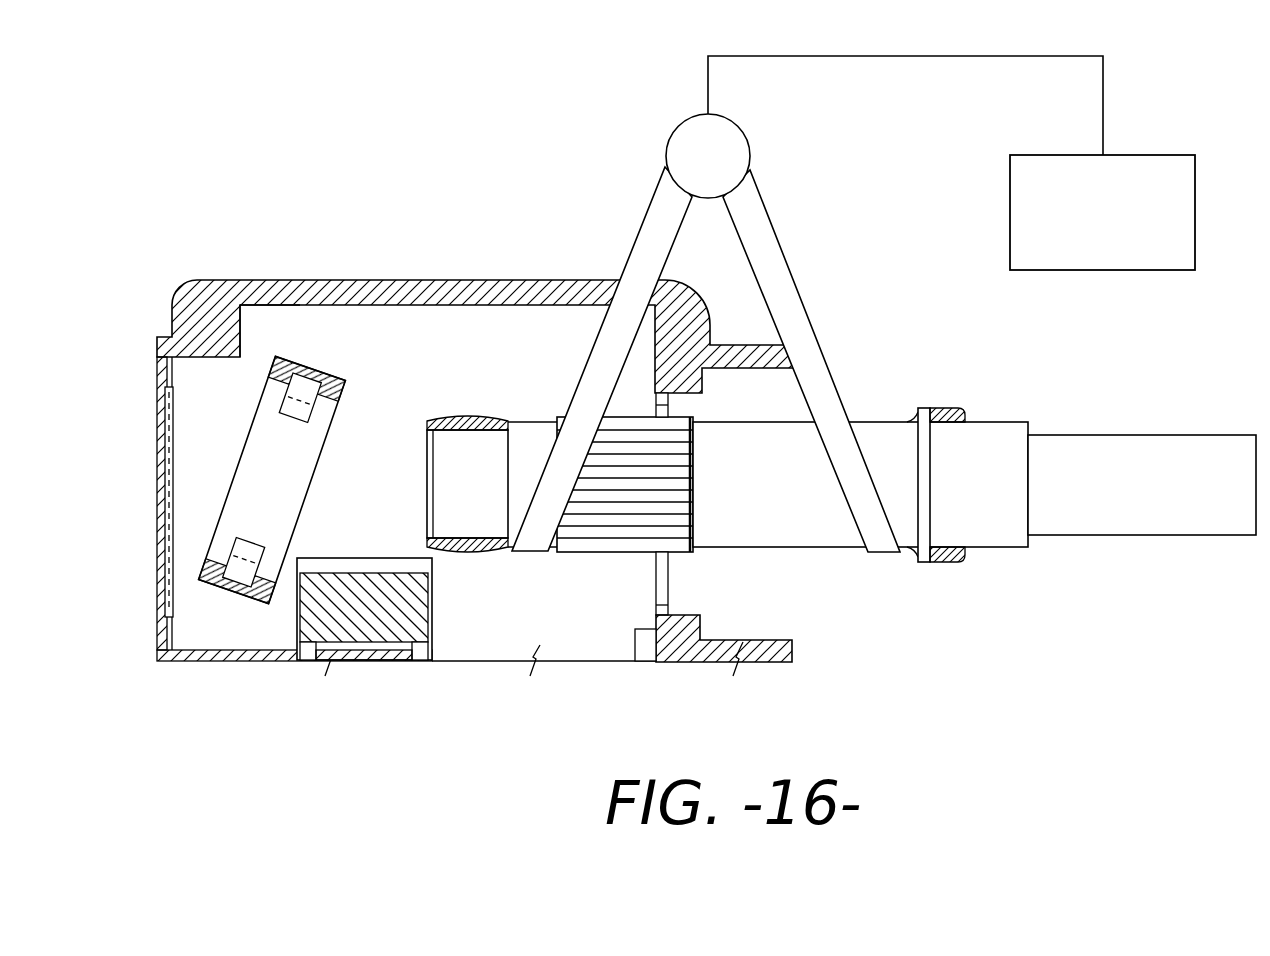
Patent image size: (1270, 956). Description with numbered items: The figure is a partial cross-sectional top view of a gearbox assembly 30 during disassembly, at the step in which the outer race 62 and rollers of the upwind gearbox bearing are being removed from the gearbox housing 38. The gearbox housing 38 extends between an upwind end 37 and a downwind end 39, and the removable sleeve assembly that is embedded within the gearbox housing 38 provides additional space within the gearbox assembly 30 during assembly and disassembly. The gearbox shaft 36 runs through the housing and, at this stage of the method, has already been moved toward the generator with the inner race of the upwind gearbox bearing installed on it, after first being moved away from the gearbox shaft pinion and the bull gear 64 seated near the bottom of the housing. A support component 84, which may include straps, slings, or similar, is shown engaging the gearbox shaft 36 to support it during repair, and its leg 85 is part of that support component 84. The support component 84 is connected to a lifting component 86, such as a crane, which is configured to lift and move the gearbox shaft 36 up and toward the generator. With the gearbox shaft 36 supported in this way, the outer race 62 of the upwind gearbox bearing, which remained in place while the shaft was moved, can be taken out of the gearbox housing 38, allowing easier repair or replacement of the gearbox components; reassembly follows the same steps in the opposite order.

The gearbox assembly 30 is at (478, 402).
The gearbox shaft 36 is at (777, 552).
The upwind end 37 is at (243, 333).
The gearbox housing 38 is at (444, 280).
The downwind end 39 is at (654, 566).
The outer race 62 is at (345, 398).
The bull gear 64 is at (380, 632).
The support component 84 is at (706, 333).
The bracket leg 85 is at (782, 240).
The lifting component 86 is at (1142, 155).